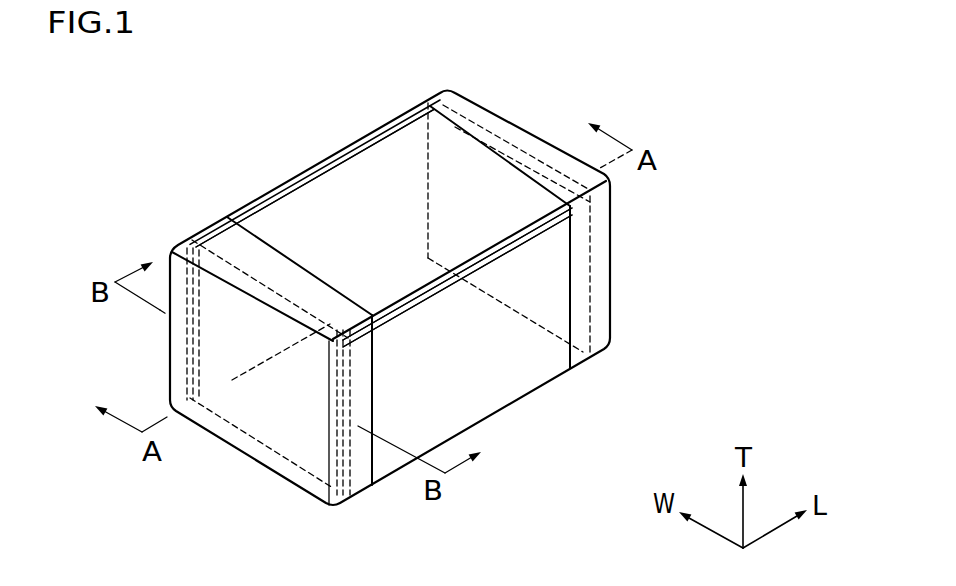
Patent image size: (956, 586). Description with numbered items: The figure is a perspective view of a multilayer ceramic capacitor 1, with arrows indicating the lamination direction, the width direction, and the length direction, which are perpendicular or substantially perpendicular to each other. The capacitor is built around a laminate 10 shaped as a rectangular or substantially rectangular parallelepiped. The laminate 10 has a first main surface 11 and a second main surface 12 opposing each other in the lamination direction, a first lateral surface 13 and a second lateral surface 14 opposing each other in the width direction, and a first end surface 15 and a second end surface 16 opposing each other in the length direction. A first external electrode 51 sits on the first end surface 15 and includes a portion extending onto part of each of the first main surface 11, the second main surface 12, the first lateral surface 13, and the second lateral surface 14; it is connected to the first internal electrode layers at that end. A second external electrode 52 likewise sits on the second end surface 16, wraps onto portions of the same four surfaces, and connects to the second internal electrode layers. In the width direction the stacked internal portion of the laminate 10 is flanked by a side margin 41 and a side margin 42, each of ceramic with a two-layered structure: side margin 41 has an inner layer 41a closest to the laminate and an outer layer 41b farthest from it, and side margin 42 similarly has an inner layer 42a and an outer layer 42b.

The multilayer ceramic capacitor 1 is at (168, 115).
The laminate 10 is at (390, 145).
The first main surface 11 is at (417, 200).
The second main surface 12 is at (463, 387).
The first lateral surface 13 is at (312, 174).
The second lateral surface 14 is at (513, 353).
The first end surface 15 is at (263, 408).
The second end surface 16 is at (500, 193).
The side margin 41 is at (241, 175).
The inner layer 41a is at (237, 232).
The outer layer 41b is at (247, 213).
The side margin 42 is at (540, 271).
The inner layer 42a is at (558, 205).
The outer layer 42b is at (513, 238).
The first external electrode 51 is at (180, 355).
The second external electrode 52 is at (602, 285).